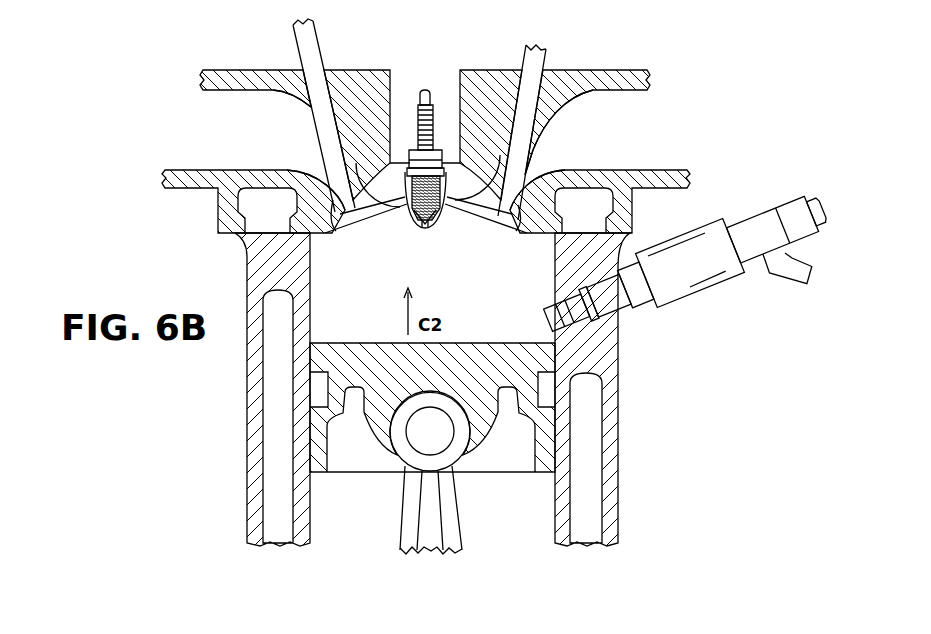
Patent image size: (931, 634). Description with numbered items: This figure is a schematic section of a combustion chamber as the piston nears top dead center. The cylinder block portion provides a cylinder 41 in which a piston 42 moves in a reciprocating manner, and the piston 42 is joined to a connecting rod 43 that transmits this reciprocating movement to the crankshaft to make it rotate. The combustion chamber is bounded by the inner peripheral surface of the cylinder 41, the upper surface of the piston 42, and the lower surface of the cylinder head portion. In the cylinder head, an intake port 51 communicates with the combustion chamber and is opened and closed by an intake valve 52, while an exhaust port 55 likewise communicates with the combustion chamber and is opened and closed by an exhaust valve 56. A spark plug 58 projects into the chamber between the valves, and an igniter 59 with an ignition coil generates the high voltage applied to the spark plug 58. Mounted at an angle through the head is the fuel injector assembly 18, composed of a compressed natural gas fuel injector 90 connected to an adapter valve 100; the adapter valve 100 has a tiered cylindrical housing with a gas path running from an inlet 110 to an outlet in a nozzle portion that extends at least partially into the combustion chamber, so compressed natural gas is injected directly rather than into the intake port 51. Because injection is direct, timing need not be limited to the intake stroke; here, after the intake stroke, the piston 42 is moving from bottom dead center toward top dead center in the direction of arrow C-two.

The fuel injector assembly 18 is at (661, 240).
The cylinder 41 is at (538, 346).
The piston 42 is at (497, 370).
The connecting rod 43 is at (463, 533).
The intake port 51 is at (603, 118).
The intake valve 52 is at (552, 100).
The exhaust port 55 is at (267, 112).
The exhaust valve 56 is at (292, 166).
The spark plug 58 is at (435, 110).
The igniter 59 is at (413, 220).
The compressed natural gas fuel injector 90 is at (793, 200).
The adapter valve 100 is at (666, 320).
The inlet 110 is at (545, 322).